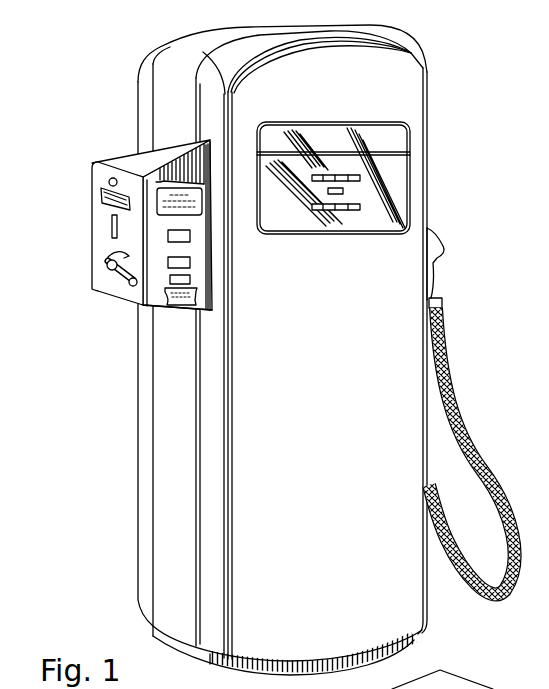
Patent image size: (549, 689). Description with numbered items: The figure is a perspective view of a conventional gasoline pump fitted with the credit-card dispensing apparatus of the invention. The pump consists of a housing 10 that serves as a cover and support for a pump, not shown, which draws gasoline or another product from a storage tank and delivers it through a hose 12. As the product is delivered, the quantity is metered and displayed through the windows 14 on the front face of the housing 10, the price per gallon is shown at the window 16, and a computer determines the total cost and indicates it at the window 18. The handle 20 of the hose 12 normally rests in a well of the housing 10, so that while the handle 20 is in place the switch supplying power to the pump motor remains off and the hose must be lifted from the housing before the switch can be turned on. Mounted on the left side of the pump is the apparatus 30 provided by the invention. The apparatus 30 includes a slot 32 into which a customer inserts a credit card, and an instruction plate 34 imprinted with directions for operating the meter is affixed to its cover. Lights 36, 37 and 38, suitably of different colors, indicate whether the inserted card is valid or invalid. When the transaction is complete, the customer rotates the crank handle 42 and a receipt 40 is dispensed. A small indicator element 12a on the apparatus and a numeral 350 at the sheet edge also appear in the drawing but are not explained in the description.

The housing 10 is at (282, 350).
The hose 12 is at (443, 320).
The indicator light 12a is at (108, 182).
The windows 14 is at (360, 178).
The window 16 is at (343, 191).
The window 18 is at (360, 207).
The handle 20 is at (433, 286).
The apparatus 30 is at (85, 241).
The slot 32 is at (110, 217).
The instruction plate 34 is at (171, 186).
The light 36 is at (190, 236).
The light 37 is at (190, 264).
The light 38 is at (190, 280).
The receipt 40 is at (167, 305).
The crank handle 42 is at (108, 275).
The adjacent figure reference 350 is at (500, 685).